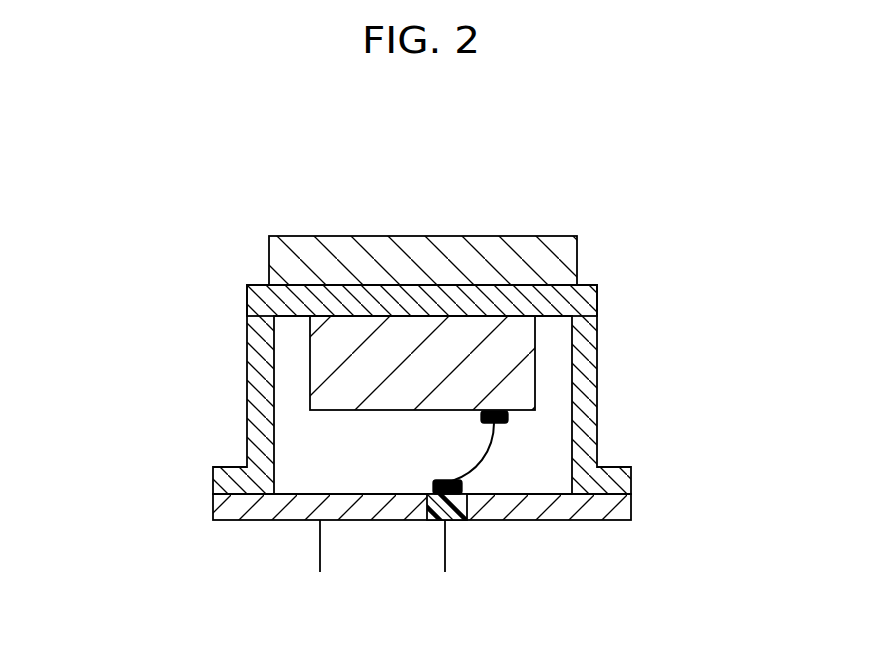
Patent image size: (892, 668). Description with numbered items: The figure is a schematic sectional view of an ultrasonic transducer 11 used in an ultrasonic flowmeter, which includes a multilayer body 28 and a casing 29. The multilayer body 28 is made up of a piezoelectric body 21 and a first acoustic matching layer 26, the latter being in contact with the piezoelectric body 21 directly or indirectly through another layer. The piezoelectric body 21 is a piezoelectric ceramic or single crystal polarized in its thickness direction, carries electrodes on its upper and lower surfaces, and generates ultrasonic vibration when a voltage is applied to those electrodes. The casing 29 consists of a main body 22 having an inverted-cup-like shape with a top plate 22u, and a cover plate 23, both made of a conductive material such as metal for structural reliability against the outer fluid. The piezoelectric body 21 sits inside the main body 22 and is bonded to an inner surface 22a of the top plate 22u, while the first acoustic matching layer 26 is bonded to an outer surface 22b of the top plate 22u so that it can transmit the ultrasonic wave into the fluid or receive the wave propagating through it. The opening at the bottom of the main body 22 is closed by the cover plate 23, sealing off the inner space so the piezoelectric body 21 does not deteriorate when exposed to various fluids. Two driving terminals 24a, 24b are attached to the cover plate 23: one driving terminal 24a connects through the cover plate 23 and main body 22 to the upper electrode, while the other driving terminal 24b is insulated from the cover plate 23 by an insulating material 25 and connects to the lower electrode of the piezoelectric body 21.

The ultrasonic transducer 11 is at (146, 272).
The piezoelectric body 21 is at (520, 340).
The main body 22 is at (598, 442).
The inner surface 22a is at (298, 316).
The outer surface 22b is at (330, 283).
The top plate 22u is at (447, 303).
The cover plate 23 is at (617, 512).
The driving terminal 24a is at (318, 533).
The driving terminal 24b is at (448, 553).
The insulating material 25 is at (465, 513).
The first acoustic matching layer 26 is at (552, 262).
The multilayer body 28 is at (658, 105).
The casing 29 is at (765, 388).